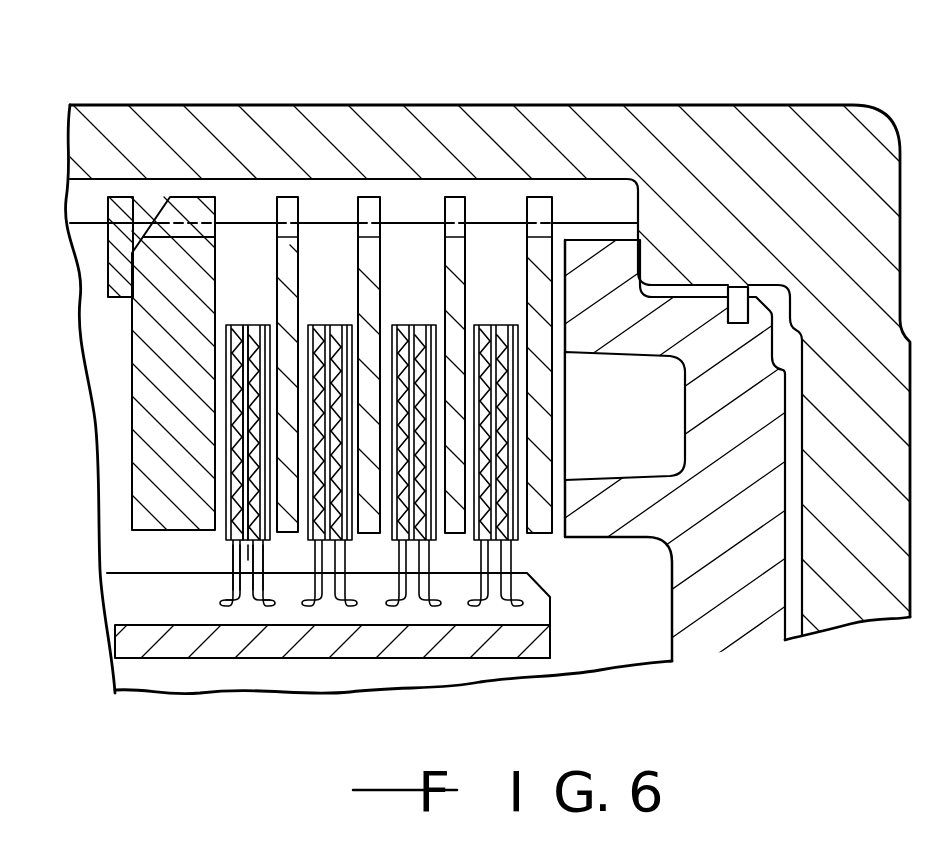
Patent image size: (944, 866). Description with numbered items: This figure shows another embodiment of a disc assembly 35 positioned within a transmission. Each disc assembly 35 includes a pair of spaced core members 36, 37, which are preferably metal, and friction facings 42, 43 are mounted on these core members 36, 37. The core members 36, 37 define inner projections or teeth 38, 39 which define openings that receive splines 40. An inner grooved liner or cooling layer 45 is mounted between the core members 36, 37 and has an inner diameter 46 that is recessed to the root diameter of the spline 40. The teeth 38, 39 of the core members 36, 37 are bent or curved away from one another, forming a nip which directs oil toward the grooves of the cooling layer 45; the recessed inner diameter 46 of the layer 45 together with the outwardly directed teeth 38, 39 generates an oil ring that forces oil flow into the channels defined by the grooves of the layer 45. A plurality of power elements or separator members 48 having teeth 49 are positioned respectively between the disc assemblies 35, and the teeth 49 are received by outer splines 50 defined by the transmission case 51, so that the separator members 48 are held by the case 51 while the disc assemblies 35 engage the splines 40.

The disc assembly 35 is at (226, 373).
The core member 36 is at (237, 554).
The core member 37 is at (268, 553).
The inner projection or tooth 38 is at (230, 597).
The inner projection or tooth 39 is at (273, 602).
The spline 40 is at (122, 570).
The friction facing 42 is at (226, 438).
The friction facing 43 is at (267, 352).
The inner grooved liner or cooling layer 45 is at (250, 476).
The inner diameter 46 is at (250, 560).
The power element or separator member 48 is at (273, 250).
The tooth 49 is at (358, 205).
The outer spline 50 is at (405, 228).
The transmission case 51 is at (742, 104).